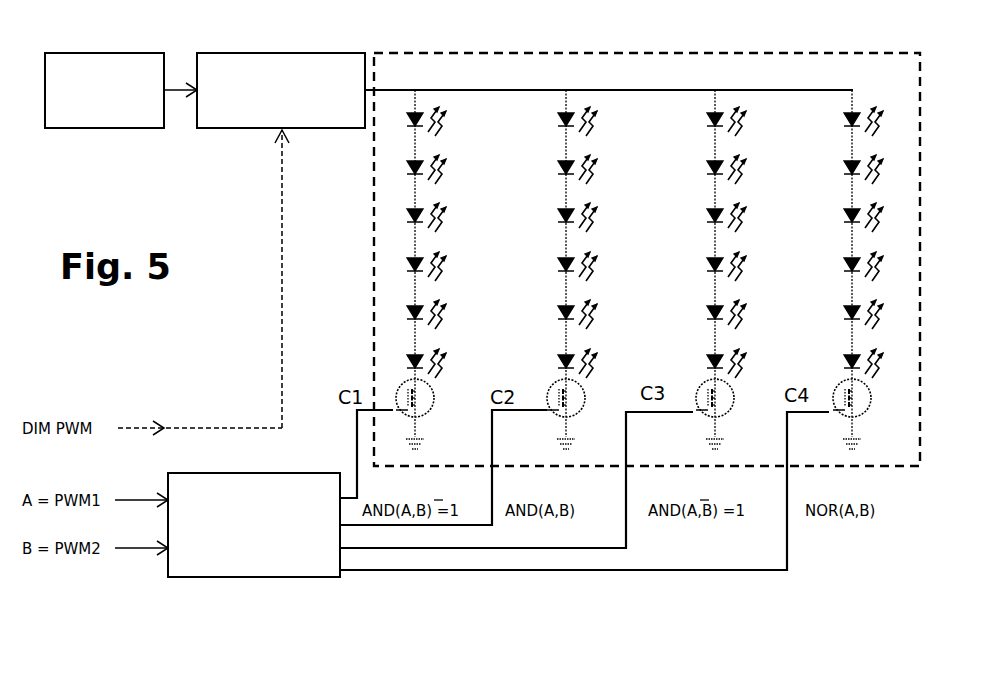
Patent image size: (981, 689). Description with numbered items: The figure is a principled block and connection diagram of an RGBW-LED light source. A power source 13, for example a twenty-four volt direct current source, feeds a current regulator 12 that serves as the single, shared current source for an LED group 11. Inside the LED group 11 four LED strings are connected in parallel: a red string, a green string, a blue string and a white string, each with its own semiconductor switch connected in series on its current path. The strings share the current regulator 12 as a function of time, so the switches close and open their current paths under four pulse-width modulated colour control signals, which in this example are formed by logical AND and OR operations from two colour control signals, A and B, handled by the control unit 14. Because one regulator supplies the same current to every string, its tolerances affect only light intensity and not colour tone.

The LED group 11 is at (598, 57).
The current regulator 12 is at (282, 52).
The power source 13 is at (112, 52).
The control unit 14 is at (218, 474).